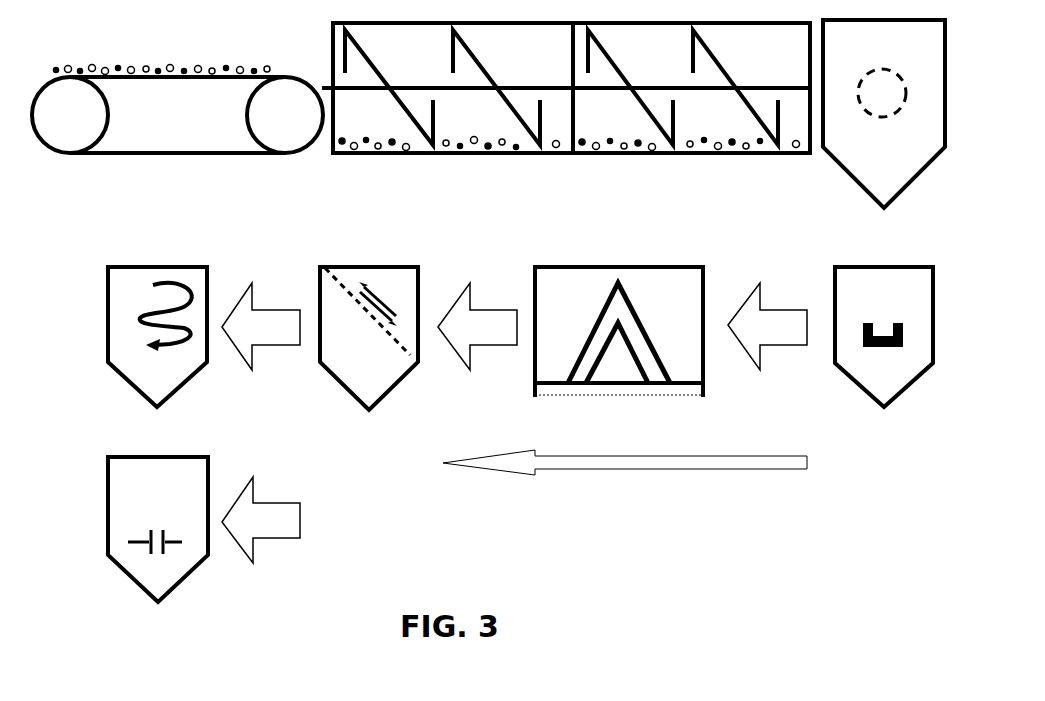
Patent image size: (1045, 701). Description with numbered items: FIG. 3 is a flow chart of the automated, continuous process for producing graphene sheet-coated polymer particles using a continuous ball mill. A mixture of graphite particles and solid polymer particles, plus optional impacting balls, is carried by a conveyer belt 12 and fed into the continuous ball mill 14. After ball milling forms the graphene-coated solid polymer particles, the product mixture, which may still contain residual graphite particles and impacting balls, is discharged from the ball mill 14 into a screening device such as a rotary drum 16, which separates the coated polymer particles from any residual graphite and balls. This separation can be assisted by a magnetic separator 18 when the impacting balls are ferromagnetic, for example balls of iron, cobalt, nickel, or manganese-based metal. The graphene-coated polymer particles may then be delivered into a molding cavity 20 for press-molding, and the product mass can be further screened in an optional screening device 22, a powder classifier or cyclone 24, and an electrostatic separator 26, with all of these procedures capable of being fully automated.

The conveyer belt 12 is at (183, 153).
The continuous ball mill 14 is at (477, 150).
The rotary drum 16 is at (853, 178).
The magnetic separator 18 is at (853, 388).
The molding cavity 20 is at (612, 394).
The screening device 22 is at (383, 408).
The powder classifier or cyclone 24 is at (125, 387).
The electrostatic separator 26 is at (142, 598).